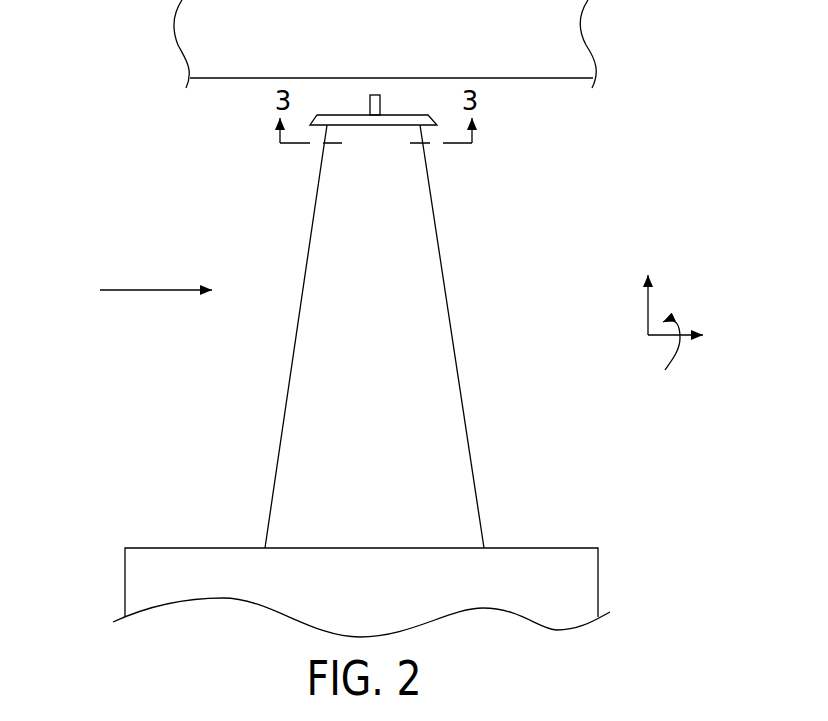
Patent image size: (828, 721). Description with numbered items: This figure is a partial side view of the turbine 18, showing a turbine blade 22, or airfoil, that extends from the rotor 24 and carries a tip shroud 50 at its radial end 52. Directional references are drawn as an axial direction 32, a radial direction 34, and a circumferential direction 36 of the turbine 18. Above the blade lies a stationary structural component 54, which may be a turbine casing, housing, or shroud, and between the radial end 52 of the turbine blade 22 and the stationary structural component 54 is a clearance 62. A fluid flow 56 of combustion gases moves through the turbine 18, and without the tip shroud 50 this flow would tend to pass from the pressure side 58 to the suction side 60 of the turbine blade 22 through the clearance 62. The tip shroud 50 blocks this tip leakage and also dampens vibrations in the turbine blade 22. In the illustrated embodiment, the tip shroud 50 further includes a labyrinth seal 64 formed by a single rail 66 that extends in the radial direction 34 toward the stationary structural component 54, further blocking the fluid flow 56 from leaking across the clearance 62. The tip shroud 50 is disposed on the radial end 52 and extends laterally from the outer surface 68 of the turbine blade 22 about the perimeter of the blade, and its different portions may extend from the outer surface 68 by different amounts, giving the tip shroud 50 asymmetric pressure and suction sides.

The turbine 18 is at (115, 220).
The turbine blade 22 is at (387, 336).
The rotor 24 is at (538, 563).
The axial direction 32 is at (668, 359).
The radial direction 34 is at (648, 312).
The circumferential direction 36 is at (680, 320).
The tip shroud 50 is at (422, 105).
The radial end 52 is at (357, 110).
The stationary structural component 54 is at (572, 43).
The fluid flow 56 is at (137, 290).
The pressure side 58 is at (297, 273).
The suction side 60 is at (452, 273).
The clearance 62 is at (334, 97).
The labyrinth seal 64 is at (417, 109).
The rail 66 is at (391, 104).
The outer surface 68 is at (317, 192).